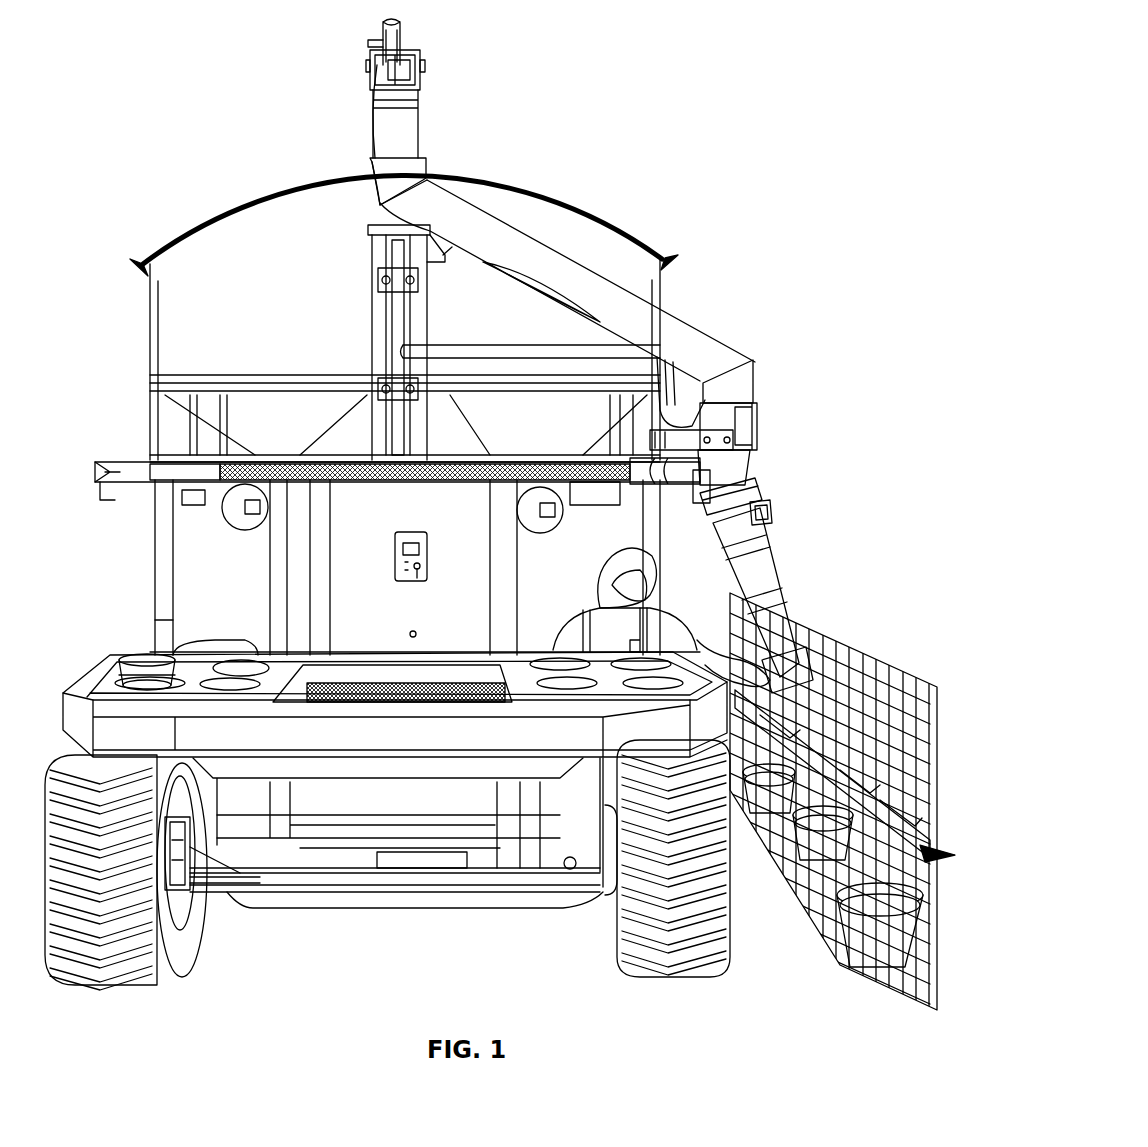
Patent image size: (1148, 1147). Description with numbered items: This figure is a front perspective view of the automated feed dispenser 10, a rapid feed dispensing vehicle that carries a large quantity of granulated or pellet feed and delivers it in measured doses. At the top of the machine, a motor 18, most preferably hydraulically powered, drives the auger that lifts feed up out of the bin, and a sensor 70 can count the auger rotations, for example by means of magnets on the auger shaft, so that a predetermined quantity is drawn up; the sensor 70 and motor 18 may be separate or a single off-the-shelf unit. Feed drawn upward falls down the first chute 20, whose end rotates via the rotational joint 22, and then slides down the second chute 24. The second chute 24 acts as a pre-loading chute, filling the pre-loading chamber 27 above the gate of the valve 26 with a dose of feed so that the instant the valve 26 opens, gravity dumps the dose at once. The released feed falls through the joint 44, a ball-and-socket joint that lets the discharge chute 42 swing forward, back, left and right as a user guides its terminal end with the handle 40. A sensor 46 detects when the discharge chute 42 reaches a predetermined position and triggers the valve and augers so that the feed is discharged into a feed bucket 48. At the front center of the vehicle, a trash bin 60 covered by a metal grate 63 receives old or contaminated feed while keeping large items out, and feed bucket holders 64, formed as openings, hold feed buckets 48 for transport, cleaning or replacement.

The automated feed dispenser 10 is at (714, 283).
The motor 18 is at (402, 22).
The first chute 20 is at (419, 128).
The rotational joint 22 is at (362, 163).
The second chute 24 is at (526, 252).
The valve 26 is at (763, 401).
The pre-loading chamber 27 is at (760, 374).
The handle 40 is at (745, 672).
The discharge chute 42 is at (790, 617).
The joint 44 is at (752, 492).
The sensor 46 is at (774, 515).
The feed bucket 48 is at (138, 655).
The trash bin 60 is at (377, 795).
The metal grate 63 is at (390, 688).
The feed bucket holders 64 is at (218, 683).
The sensor 70 is at (366, 43).